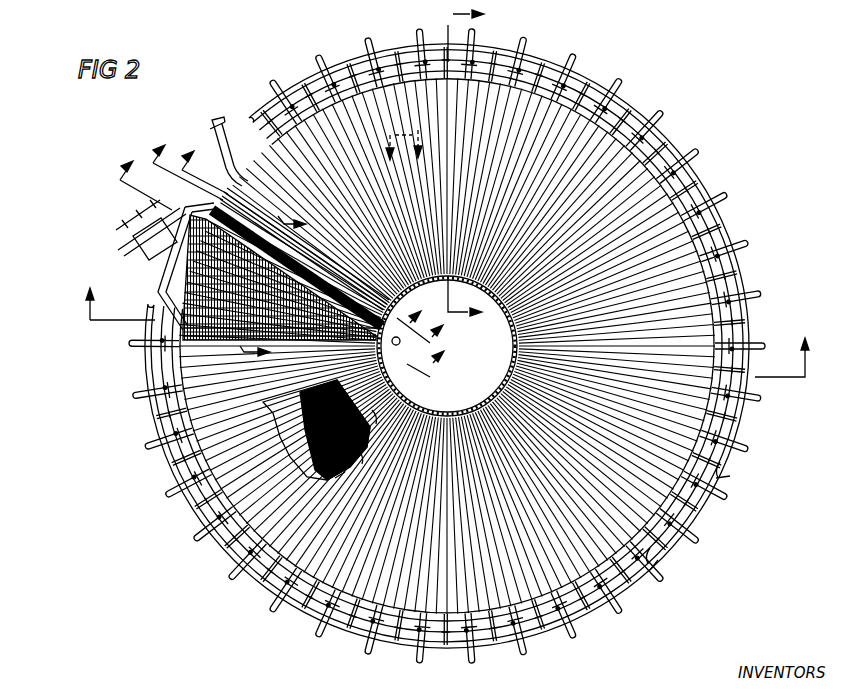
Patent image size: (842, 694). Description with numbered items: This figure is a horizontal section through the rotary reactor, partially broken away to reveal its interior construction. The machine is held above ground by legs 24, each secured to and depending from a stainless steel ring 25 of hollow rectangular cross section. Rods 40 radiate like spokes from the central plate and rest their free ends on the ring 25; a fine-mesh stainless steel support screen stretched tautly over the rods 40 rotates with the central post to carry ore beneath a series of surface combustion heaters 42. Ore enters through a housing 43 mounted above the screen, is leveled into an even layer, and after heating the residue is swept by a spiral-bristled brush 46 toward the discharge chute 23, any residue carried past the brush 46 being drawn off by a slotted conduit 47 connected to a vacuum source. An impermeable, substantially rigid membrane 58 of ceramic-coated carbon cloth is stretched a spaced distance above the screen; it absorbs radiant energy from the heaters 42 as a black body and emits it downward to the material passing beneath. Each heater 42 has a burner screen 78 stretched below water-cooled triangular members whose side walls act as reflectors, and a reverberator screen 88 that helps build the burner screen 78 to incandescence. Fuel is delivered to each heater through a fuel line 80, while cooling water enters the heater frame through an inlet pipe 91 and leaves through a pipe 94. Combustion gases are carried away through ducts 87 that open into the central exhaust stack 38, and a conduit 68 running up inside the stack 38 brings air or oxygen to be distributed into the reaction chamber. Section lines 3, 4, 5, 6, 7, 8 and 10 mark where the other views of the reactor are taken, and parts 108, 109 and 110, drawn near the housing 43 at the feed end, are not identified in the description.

The section line 8- 8 is at (457, 164).
The legs 24 is at (306, 74).
The section line 10- 10 is at (400, 136).
The section line 4- 4 is at (304, 247).
The section line 5- 5 is at (291, 261).
The section line 6- 6 is at (273, 276).
The pin 110 is at (128, 212).
The bracket 109 is at (112, 246).
The block 108 is at (144, 260).
The section line 3- 3 is at (445, 346).
The section line 7- 7 is at (266, 279).
The housing 43 is at (303, 223).
The chute 23 is at (319, 245).
The slotted conduit 47 is at (339, 264).
The brush 46 is at (280, 277).
The central exhaust stack 38 is at (490, 390).
The conduit 68 is at (400, 346).
The impermeable membrane 58 is at (370, 422).
The burner screen 78 is at (350, 458).
The reverberator screen 88 is at (331, 478).
The rods 40 is at (306, 458).
The surface combustion heaters 42 is at (192, 474).
The ring 25 is at (236, 552).
The ducts 87 is at (322, 632).
The fuel line 80 is at (742, 425).
The inlet pipe 91 is at (714, 480).
The pipe 94 is at (658, 570).